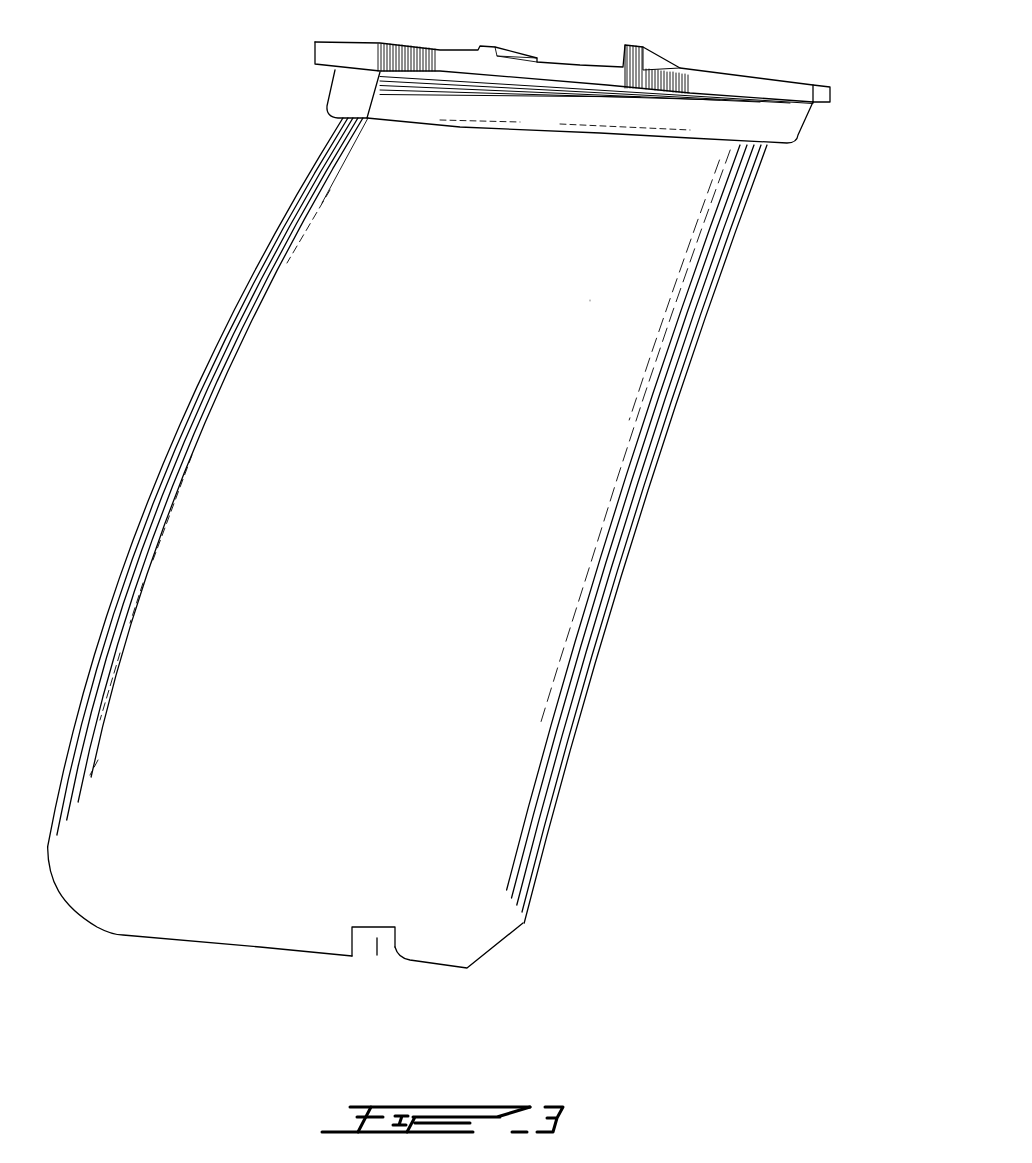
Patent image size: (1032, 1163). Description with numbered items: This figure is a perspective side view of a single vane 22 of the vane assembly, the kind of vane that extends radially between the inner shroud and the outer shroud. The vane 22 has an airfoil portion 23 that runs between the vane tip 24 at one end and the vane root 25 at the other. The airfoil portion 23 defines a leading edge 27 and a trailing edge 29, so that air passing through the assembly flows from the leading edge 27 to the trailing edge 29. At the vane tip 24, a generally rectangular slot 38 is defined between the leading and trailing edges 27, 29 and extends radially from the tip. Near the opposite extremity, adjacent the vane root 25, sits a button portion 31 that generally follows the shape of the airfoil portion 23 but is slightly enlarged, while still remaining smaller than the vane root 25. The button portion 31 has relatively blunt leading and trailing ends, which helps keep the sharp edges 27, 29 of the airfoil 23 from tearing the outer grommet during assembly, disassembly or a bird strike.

The vane 22 is at (479, 541).
The airfoil portion 23 is at (585, 492).
The vane tip 24 is at (468, 968).
The vane root 25 is at (820, 86).
The leading edge 27 is at (190, 400).
The trailing edge 29 is at (587, 675).
The button portion 31 is at (730, 117).
The slot 38 is at (377, 955).